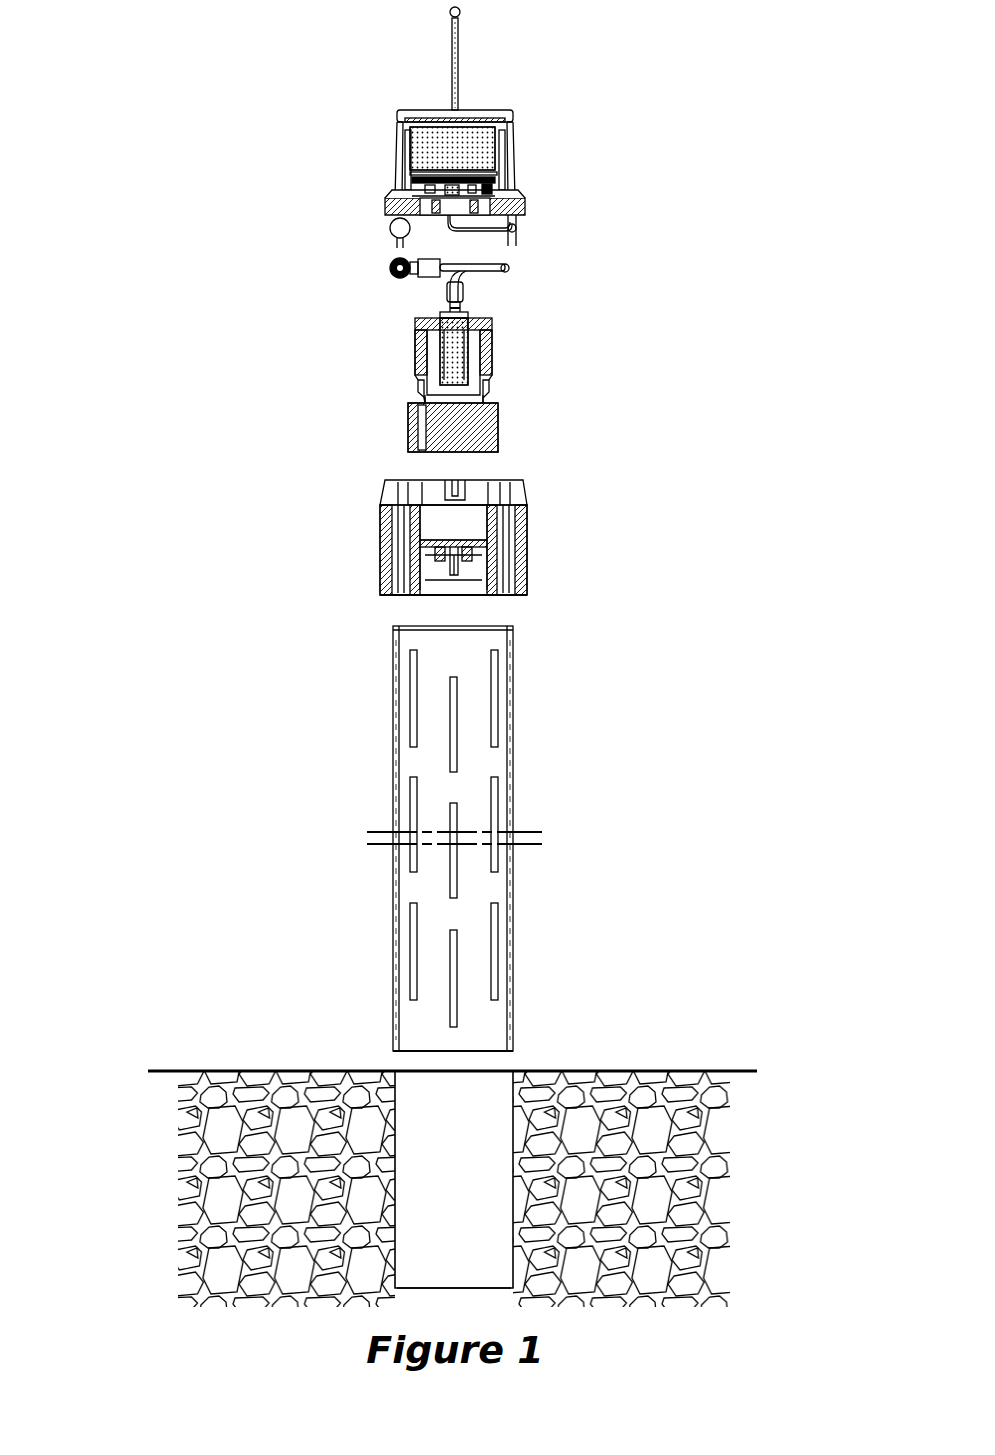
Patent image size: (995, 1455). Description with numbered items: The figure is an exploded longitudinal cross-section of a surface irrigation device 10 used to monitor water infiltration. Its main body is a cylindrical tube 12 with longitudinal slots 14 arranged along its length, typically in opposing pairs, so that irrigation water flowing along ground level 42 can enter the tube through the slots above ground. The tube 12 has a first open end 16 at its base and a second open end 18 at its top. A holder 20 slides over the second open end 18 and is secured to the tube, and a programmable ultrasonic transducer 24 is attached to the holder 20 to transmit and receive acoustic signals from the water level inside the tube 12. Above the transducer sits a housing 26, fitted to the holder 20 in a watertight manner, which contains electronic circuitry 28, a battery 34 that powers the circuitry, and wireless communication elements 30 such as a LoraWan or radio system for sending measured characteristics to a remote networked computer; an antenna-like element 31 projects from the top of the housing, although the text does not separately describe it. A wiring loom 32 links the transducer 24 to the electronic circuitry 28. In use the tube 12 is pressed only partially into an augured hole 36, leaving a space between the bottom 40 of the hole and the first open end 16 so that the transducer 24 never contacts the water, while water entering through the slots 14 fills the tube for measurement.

The surface irrigation device 10 is at (138, 62).
The cylindrical tube 12 is at (514, 710).
The longitudinal slots 14 is at (411, 664).
The first open end 16 is at (455, 1052).
The second open end 18 is at (455, 625).
The holder 20 is at (527, 530).
The programmable ultrasonic transducer 24 is at (466, 423).
The housing 26 is at (490, 110).
The electronic circuitry 28 is at (470, 181).
The wireless communication elements 30 is at (490, 24).
The antenna 31 is at (458, 54).
The wiring loom 32 is at (506, 268).
The battery 34 is at (481, 147).
The augured hole 36 is at (465, 1164).
The bottom of hole 40 is at (453, 1288).
The ground level 42 is at (681, 1070).